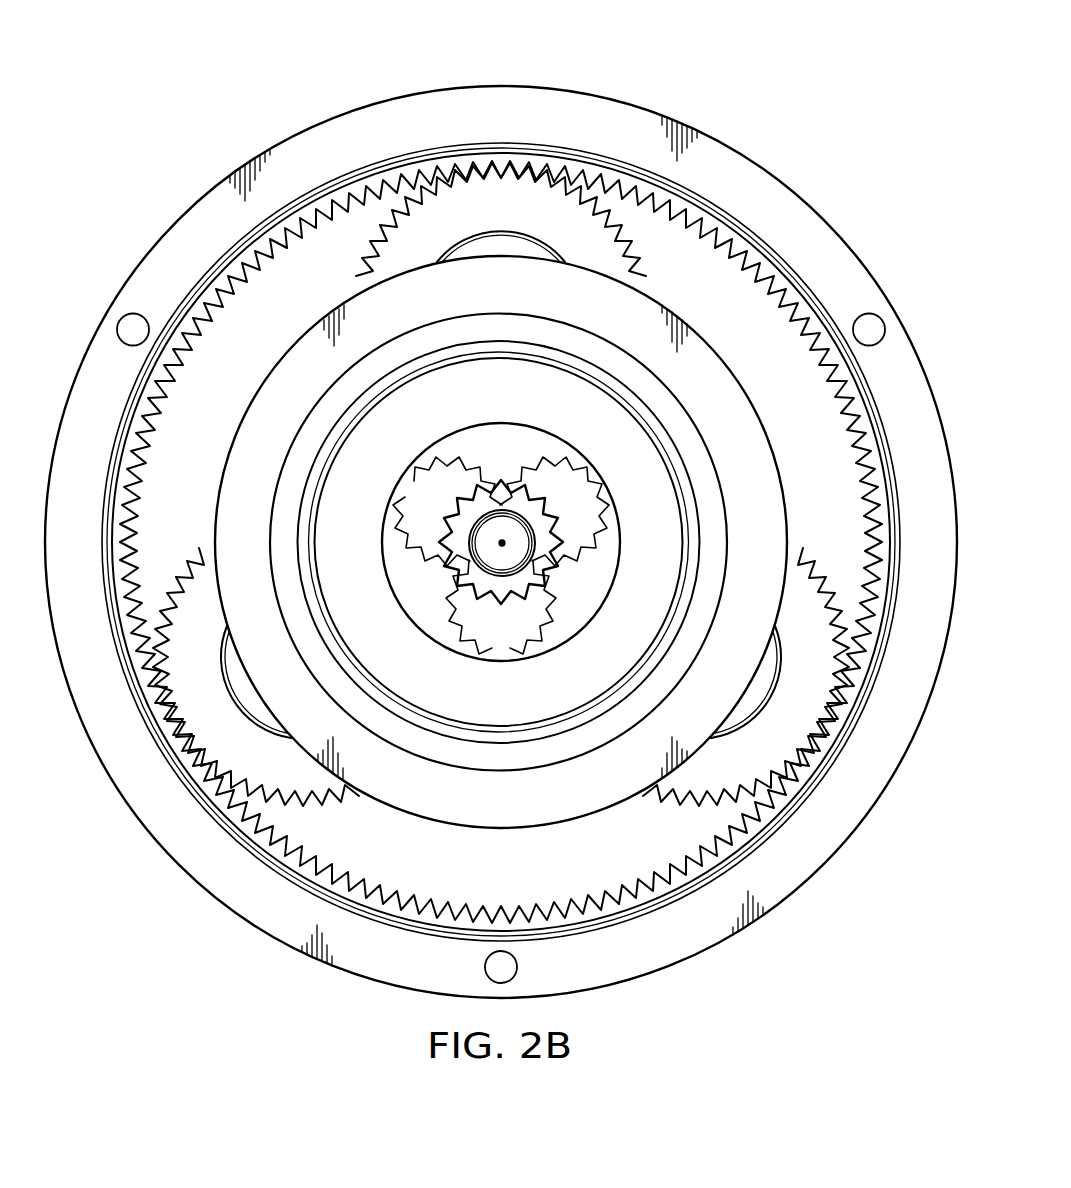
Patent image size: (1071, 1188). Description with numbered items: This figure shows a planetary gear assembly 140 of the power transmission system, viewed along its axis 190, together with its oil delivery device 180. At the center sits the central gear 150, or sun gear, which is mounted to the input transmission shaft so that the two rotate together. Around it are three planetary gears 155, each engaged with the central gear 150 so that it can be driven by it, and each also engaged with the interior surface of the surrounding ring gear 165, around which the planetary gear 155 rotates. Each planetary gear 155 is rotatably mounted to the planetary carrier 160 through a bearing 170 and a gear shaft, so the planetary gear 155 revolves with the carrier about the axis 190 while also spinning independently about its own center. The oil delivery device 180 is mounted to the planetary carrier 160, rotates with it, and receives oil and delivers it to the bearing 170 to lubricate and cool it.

The planetary gear assembly 140 is at (348, 81).
The ring gear 165 is at (590, 93).
The bearing 170 is at (487, 248).
The planetary gear 155 is at (640, 245).
The planetary carrier 160 is at (282, 360).
The oil delivery device 180 is at (729, 503).
The central gear 150 is at (460, 511).
The axis 190 is at (500, 540).